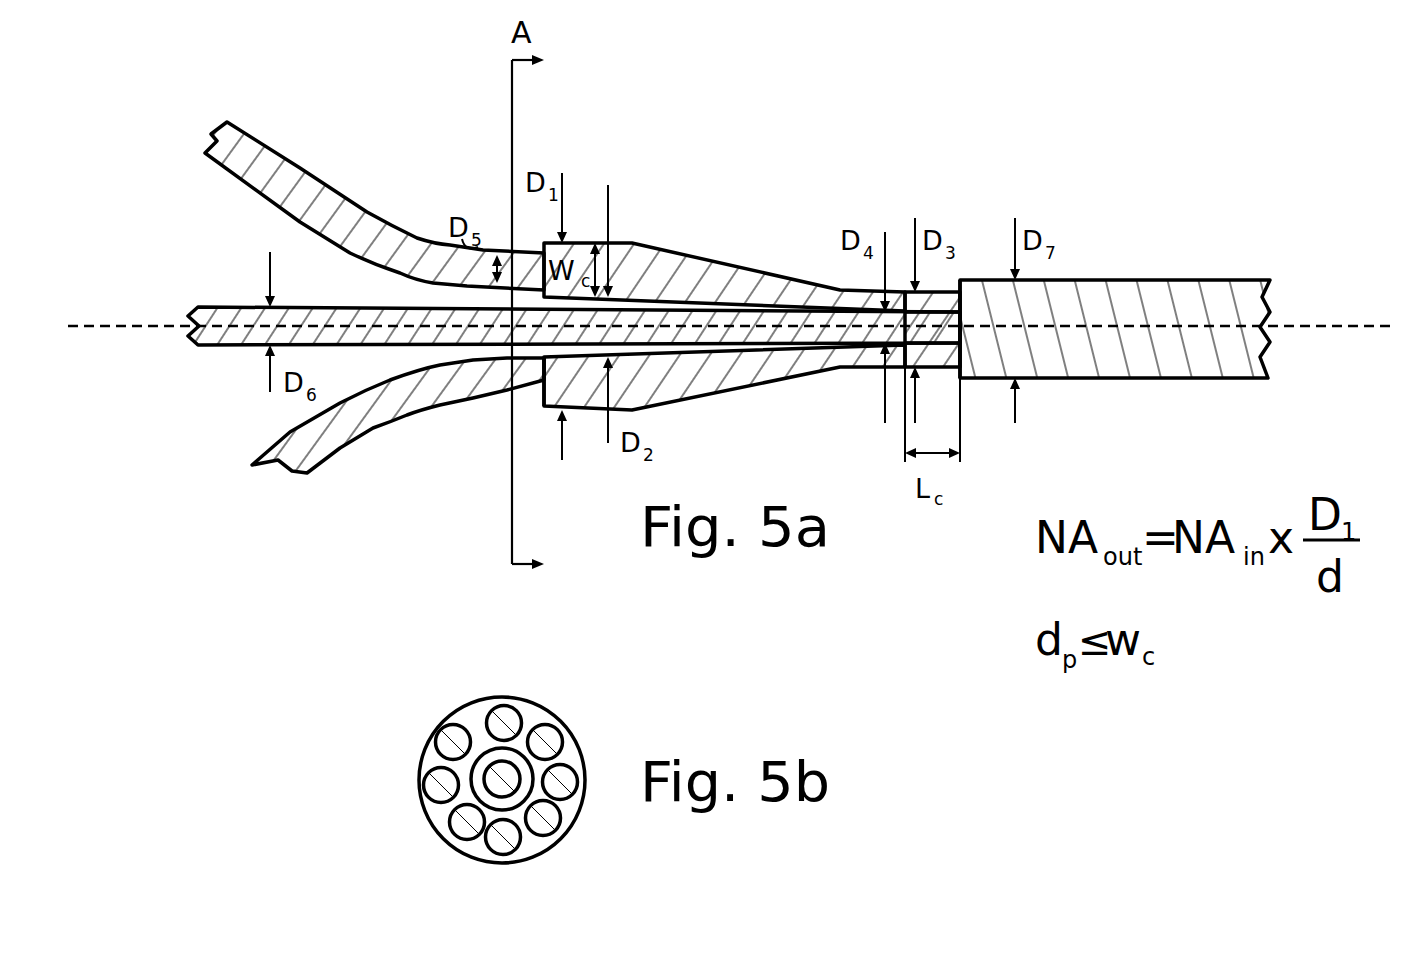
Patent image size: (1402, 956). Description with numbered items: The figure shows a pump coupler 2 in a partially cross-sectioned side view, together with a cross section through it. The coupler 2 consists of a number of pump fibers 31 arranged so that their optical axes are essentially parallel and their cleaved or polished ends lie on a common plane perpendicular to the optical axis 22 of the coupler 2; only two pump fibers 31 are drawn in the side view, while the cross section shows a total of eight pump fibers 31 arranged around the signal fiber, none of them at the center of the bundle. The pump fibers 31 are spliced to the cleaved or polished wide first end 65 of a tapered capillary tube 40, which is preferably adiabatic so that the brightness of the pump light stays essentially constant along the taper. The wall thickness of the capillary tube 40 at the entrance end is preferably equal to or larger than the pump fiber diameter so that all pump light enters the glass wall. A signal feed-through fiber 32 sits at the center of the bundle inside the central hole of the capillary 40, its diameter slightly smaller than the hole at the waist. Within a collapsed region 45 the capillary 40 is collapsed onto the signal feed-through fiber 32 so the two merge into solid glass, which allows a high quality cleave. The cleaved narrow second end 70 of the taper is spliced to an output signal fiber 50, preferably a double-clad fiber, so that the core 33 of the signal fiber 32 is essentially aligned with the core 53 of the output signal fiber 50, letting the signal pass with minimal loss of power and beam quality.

In FIG. 5A, the pump coupler 2 is at (783, 228).
In FIG. 5A, the optical axis 22 is at (1343, 328).
In FIG. 5A, the pump fibers 31 is at (362, 213).
In FIG. 5B, the pump fibers 31 is at (487, 722).
In FIG. 5A, the signal feed-through fiber 32 is at (557, 325).
In FIG. 5B, the signal feed-through fiber 32 is at (490, 775).
In FIG. 5A, the core of the signal fiber 33 is at (258, 322).
In FIG. 5A, the tapered capillary tube 40 is at (663, 247).
In FIG. 5B, the tapered capillary tube 40 is at (477, 700).
In FIG. 5A, the collapsed region 45 is at (940, 292).
In FIG. 5A, the output signal fiber 50 is at (1115, 278).
In FIG. 5A, the core of the output signal fiber 53 is at (1117, 325).
In FIG. 5A, the wide first end 65 is at (483, 398).
In FIG. 5A, the narrow second end 70 is at (963, 357).